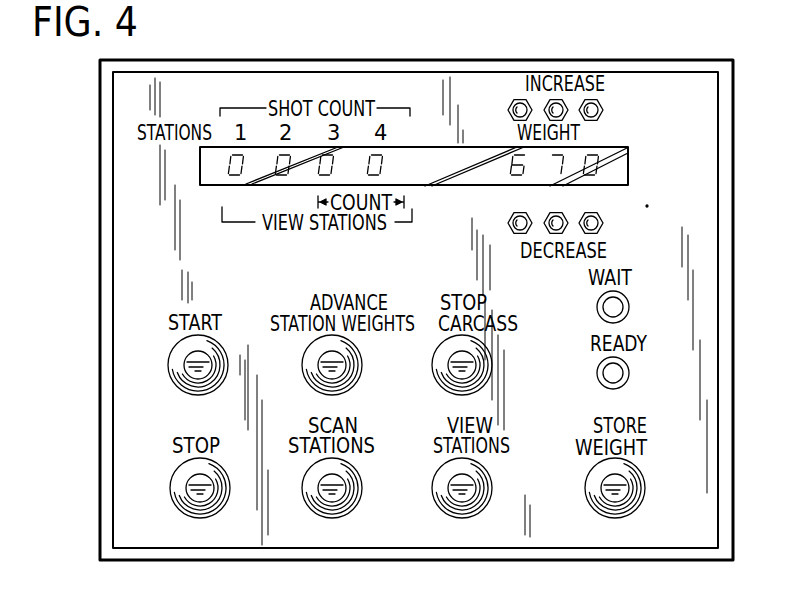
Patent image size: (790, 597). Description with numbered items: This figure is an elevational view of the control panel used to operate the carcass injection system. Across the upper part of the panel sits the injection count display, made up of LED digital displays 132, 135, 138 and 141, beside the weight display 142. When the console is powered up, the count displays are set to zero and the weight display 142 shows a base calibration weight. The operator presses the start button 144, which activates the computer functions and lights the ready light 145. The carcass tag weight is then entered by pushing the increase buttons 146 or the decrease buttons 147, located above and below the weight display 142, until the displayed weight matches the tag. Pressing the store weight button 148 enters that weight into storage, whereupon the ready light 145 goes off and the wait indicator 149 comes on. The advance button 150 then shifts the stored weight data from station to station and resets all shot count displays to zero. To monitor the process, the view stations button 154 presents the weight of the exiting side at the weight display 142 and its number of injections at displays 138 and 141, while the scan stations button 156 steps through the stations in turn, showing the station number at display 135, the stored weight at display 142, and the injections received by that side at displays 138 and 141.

The LED digital display 132 is at (228, 184).
The LED digital display 135 is at (283, 158).
The LED digital display 138 is at (320, 168).
The LED digital display 141 is at (383, 177).
The weight display 142 is at (612, 185).
The increase buttons 146 is at (580, 110).
The decrease buttons 147 is at (572, 222).
The start button 144 is at (196, 370).
The advance button 150 is at (335, 368).
The scan stations button 156 is at (333, 494).
The view stations button 154 is at (466, 486).
The wait indicator 149 is at (629, 307).
The ready light 145 is at (629, 373).
The store weight button 148 is at (625, 490).